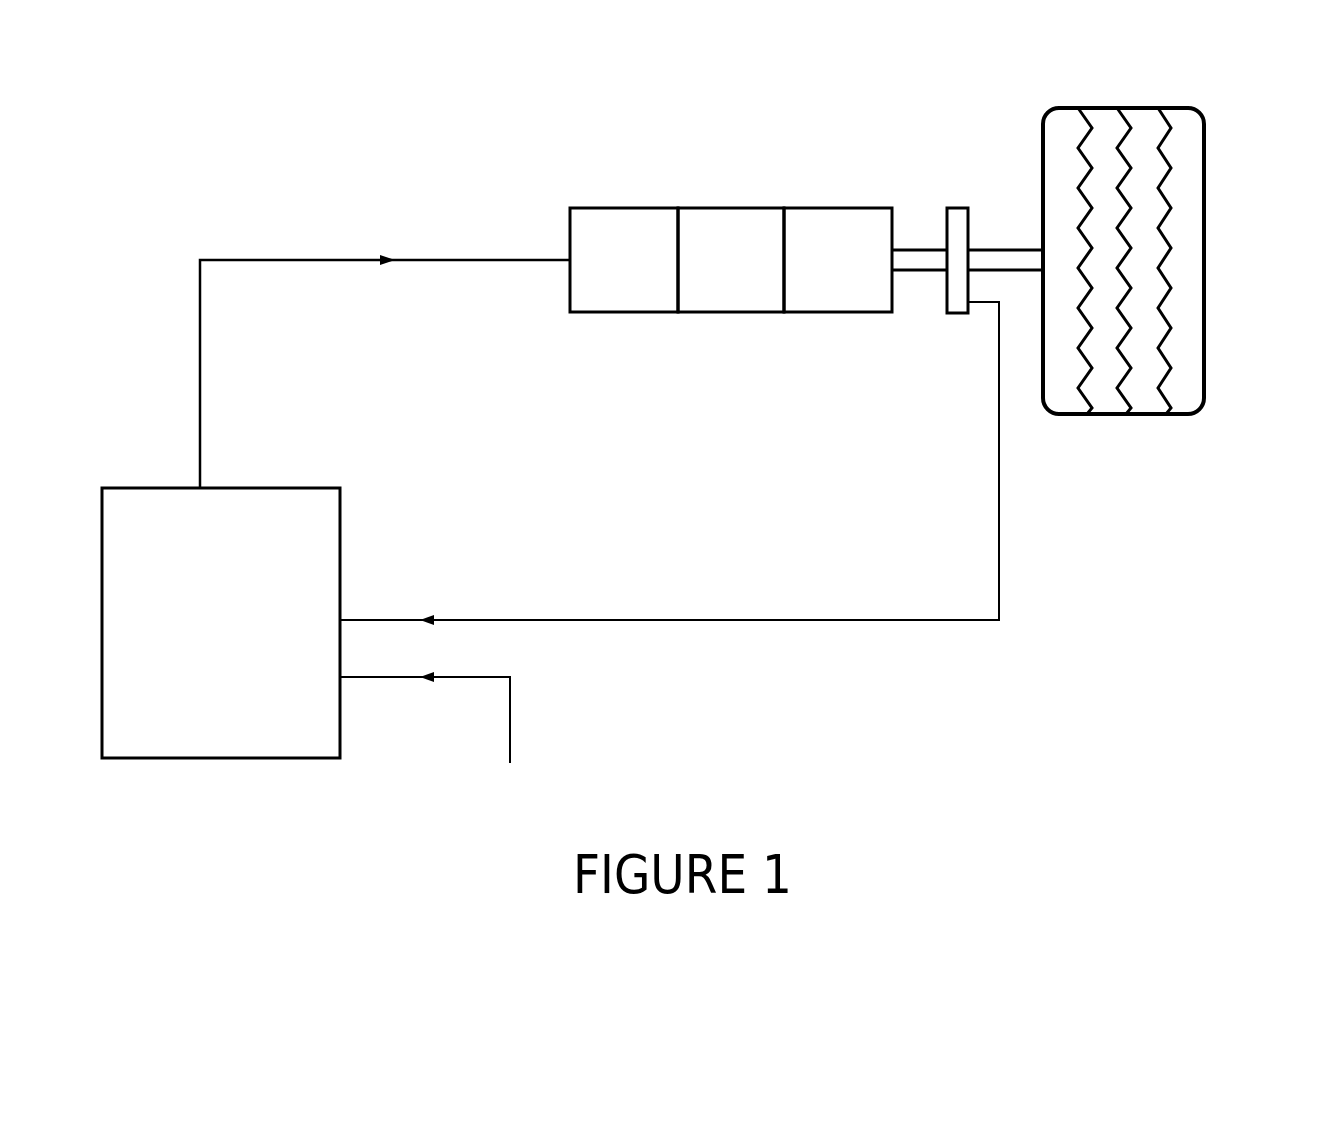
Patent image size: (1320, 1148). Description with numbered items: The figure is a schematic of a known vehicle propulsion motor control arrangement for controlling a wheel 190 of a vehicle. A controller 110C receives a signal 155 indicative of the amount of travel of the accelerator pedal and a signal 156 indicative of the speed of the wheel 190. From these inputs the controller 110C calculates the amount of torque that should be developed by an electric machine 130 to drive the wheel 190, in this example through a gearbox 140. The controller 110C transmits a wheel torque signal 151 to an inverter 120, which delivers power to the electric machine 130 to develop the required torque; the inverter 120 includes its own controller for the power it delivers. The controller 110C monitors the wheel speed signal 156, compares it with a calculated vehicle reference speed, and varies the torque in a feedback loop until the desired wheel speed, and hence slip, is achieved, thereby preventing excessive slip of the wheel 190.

The controller 110C is at (248, 636).
The inverter 120 is at (627, 296).
The electric machine 130 is at (733, 296).
The gearbox 140 is at (838, 296).
The signal 151 is at (385, 354).
The signal 155 is at (425, 717).
The signal 156 is at (669, 463).
The wheel 190 is at (1205, 372).